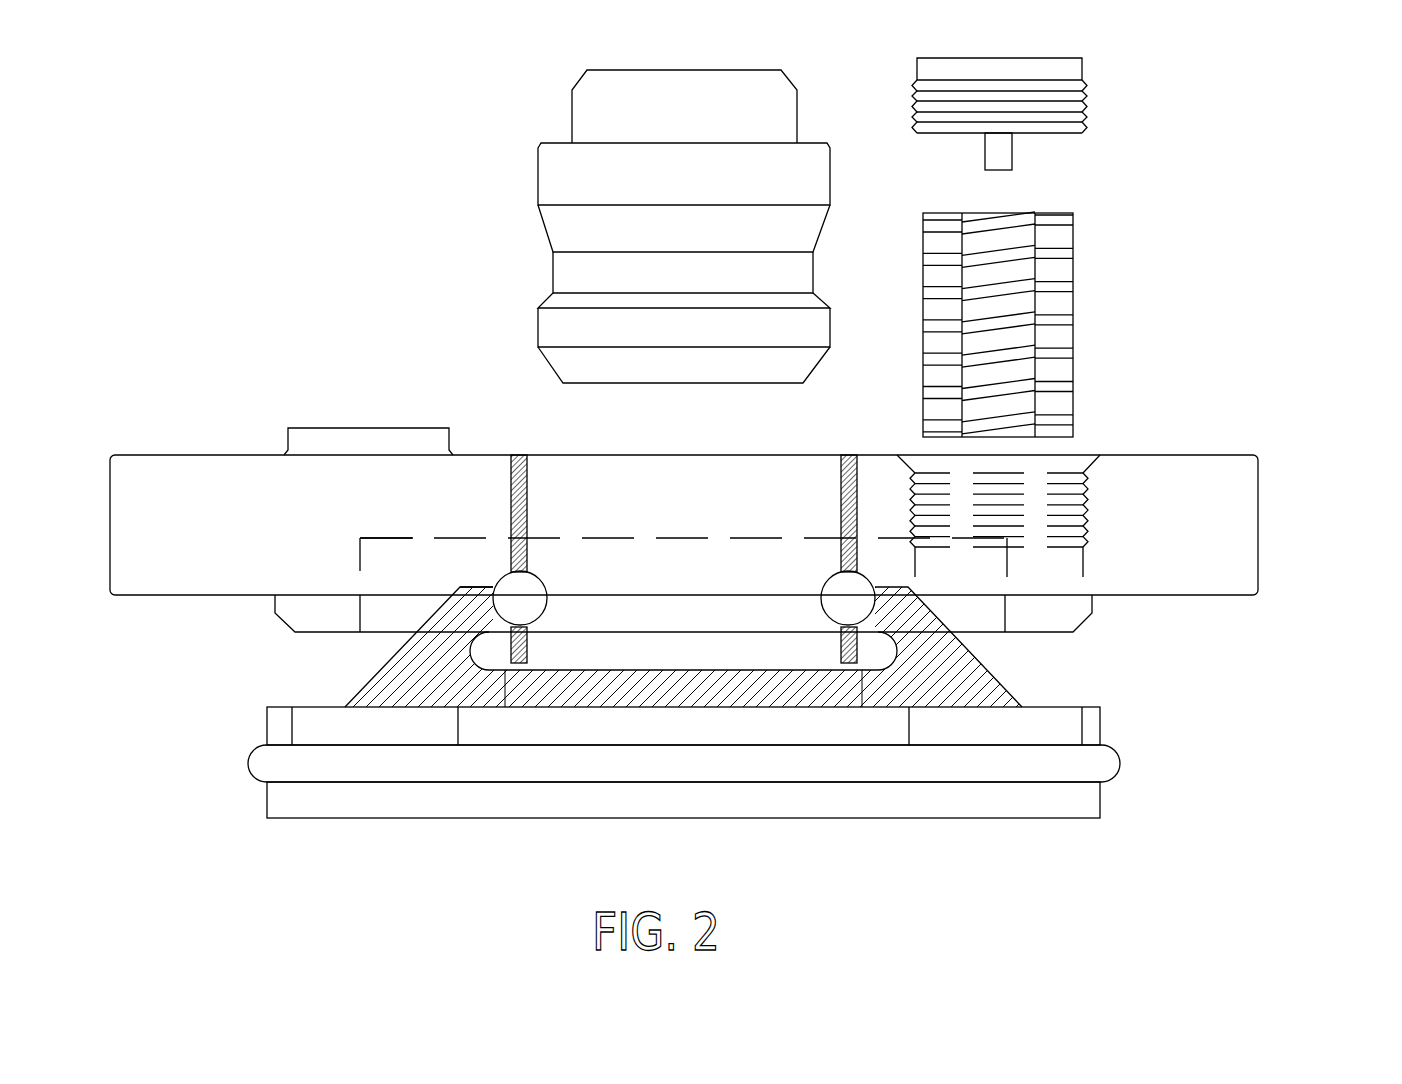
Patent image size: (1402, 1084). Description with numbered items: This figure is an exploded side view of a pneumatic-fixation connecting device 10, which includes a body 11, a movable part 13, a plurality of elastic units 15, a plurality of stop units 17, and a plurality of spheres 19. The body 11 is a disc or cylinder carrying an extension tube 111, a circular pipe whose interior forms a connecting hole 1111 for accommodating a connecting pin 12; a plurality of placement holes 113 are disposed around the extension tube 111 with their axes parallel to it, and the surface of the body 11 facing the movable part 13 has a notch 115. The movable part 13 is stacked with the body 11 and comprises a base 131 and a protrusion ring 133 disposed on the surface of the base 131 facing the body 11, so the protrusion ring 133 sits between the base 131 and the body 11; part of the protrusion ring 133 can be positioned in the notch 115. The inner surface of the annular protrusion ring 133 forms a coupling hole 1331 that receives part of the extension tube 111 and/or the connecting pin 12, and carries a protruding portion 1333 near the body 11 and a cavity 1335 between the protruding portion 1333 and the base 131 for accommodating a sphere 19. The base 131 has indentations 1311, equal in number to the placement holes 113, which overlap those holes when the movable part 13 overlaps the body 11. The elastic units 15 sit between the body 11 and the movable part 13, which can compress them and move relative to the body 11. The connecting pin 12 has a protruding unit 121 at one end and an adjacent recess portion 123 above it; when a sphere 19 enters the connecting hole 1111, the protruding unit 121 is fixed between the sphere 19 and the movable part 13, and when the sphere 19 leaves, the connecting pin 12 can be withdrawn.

The pneumatic-fixation connecting device 10 is at (279, 205).
The body 11 is at (1245, 508).
The extension tube 111 is at (517, 455).
The connecting hole 1111 is at (757, 503).
The placement hole 113 is at (1068, 462).
The notch 115 is at (368, 552).
The connecting pin 12 is at (616, 226).
The protruding unit 121 is at (543, 326).
The recess portion 123 is at (545, 262).
The movable part 13 is at (724, 687).
The base 131 is at (736, 747).
The indentation 1311 is at (1098, 728).
The protrusion ring 133 is at (706, 631).
The coupling hole 1331 is at (657, 650).
The protruding portion 1333 is at (483, 600).
The cavity 1335 is at (487, 643).
The elastic unit 15 is at (1063, 272).
The stop unit 17 is at (1072, 110).
The sphere 19 is at (537, 588).